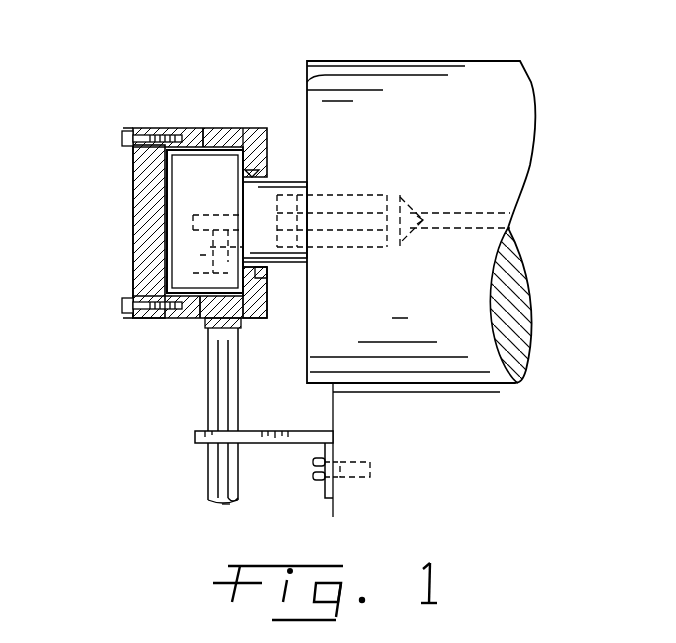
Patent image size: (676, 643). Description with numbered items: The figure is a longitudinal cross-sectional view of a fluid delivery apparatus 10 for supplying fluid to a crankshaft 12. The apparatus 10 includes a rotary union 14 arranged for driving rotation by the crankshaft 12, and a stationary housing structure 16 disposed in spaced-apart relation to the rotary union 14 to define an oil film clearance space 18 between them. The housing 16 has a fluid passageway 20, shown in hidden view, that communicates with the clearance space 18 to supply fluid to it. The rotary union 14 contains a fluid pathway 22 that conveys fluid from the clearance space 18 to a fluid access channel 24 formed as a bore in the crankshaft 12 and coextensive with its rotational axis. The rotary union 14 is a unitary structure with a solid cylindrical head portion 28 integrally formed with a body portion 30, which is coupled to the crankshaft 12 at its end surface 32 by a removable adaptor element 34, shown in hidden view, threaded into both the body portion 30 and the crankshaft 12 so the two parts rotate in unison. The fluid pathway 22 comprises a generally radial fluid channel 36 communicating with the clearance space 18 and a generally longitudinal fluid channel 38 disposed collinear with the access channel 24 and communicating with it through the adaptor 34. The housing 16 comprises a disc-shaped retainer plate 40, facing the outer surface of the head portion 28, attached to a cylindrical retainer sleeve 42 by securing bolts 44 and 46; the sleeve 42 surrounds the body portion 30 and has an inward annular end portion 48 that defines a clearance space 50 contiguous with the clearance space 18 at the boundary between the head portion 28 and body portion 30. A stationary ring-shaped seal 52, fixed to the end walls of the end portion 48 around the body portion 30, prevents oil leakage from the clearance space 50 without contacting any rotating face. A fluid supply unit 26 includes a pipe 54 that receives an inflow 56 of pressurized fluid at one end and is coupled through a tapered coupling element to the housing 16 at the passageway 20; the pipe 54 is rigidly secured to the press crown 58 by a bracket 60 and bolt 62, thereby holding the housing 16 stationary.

The fluid delivery apparatus 10 is at (100, 88).
The crankshaft 12 is at (515, 87).
The rotary union 14 is at (187, 196).
The stationary housing structure 16 is at (118, 184).
The oil film clearance space 18 is at (190, 140).
The fluid passageway 20 is at (222, 332).
The fluid pathway 22 is at (193, 240).
The fluid access channel 24 is at (460, 213).
The fluid supply unit 26 is at (193, 404).
The head portion 28 is at (197, 137).
The body portion 30 is at (290, 182).
The end surface 32 is at (332, 72).
The adaptor element 34 is at (362, 197).
The fluid channel 36 is at (255, 320).
The fluid channel 38 is at (215, 215).
The retainer plate 40 is at (143, 228).
The retainer sleeve 42 is at (205, 137).
The securing bolt 44 is at (125, 135).
The securing bolt 46 is at (120, 305).
The inward annular end portion 48 is at (250, 113).
The clearance space 50 is at (270, 282).
The seal 52 is at (262, 270).
The pipe 54 is at (215, 482).
The inflow 56 is at (225, 515).
The press crown 58 is at (421, 440).
The bracket 60 is at (227, 443).
The bolt 62 is at (353, 473).